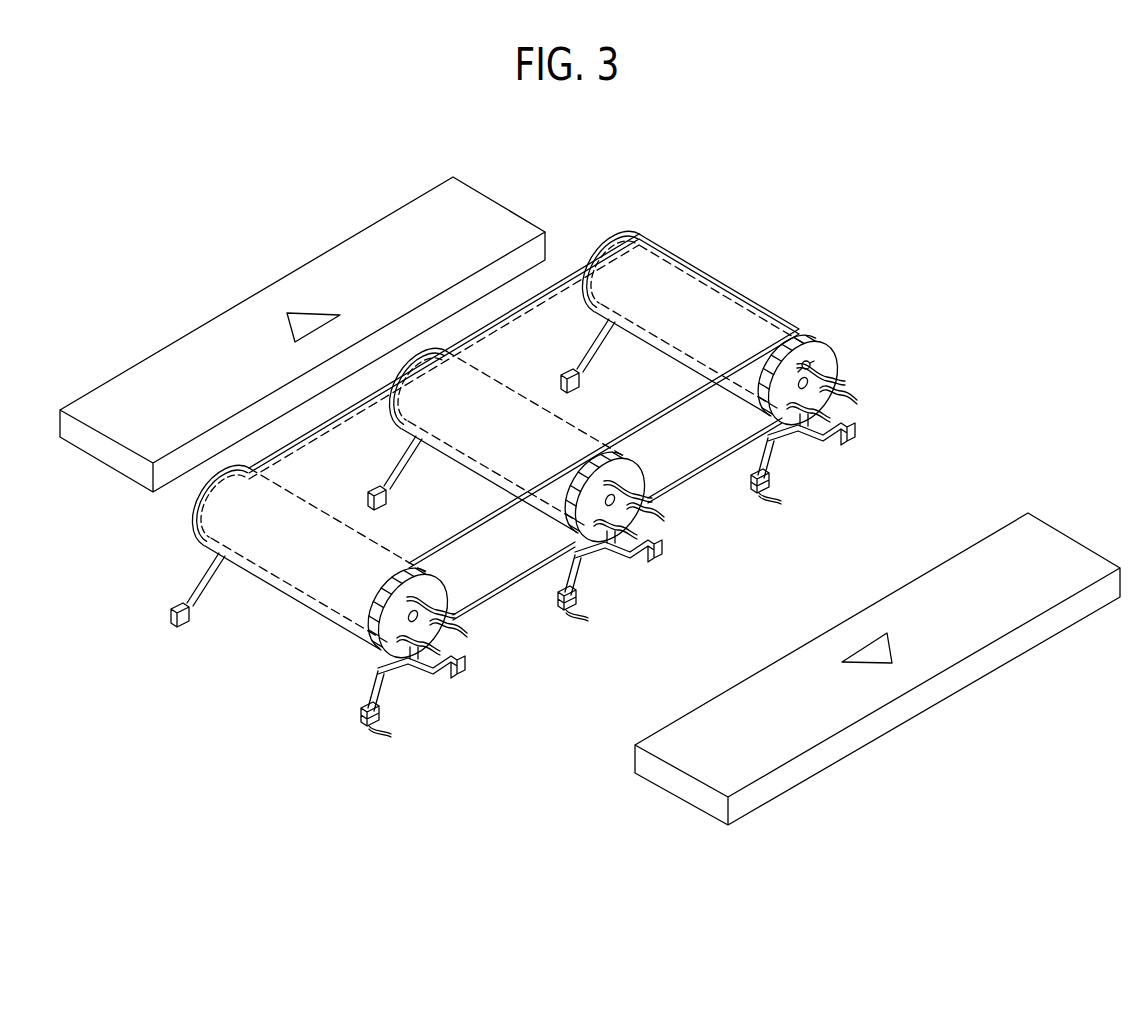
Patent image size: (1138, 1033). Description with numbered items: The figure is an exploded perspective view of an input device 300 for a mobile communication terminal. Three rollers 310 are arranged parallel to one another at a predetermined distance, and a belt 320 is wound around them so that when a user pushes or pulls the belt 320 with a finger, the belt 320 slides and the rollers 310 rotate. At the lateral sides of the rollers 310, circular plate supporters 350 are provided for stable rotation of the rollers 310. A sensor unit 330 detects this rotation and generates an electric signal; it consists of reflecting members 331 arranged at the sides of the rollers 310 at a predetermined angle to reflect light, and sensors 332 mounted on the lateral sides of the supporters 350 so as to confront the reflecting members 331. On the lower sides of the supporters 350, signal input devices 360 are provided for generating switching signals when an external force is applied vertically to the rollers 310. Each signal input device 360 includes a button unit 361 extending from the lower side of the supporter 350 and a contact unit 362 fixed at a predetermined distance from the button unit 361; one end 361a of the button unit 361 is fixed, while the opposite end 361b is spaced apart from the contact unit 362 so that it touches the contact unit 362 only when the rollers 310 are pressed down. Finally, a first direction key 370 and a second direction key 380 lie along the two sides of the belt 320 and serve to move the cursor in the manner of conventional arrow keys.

The input device 300 is at (805, 109).
The roller 310 is at (484, 370).
The belt 320 is at (680, 255).
The sensor unit 330 is at (844, 344).
The reflecting member 331 is at (800, 338).
The sensor 332 is at (806, 362).
The circular plate supporter 350 is at (410, 357).
The signal input device 360 is at (596, 589).
The button unit 361 is at (604, 566).
The end of the button unit 361a is at (428, 658).
The opposite end of the button unit 361b is at (398, 700).
The contact unit 362 is at (500, 815).
The first direction key 370 is at (178, 366).
The second direction key 380 is at (813, 720).